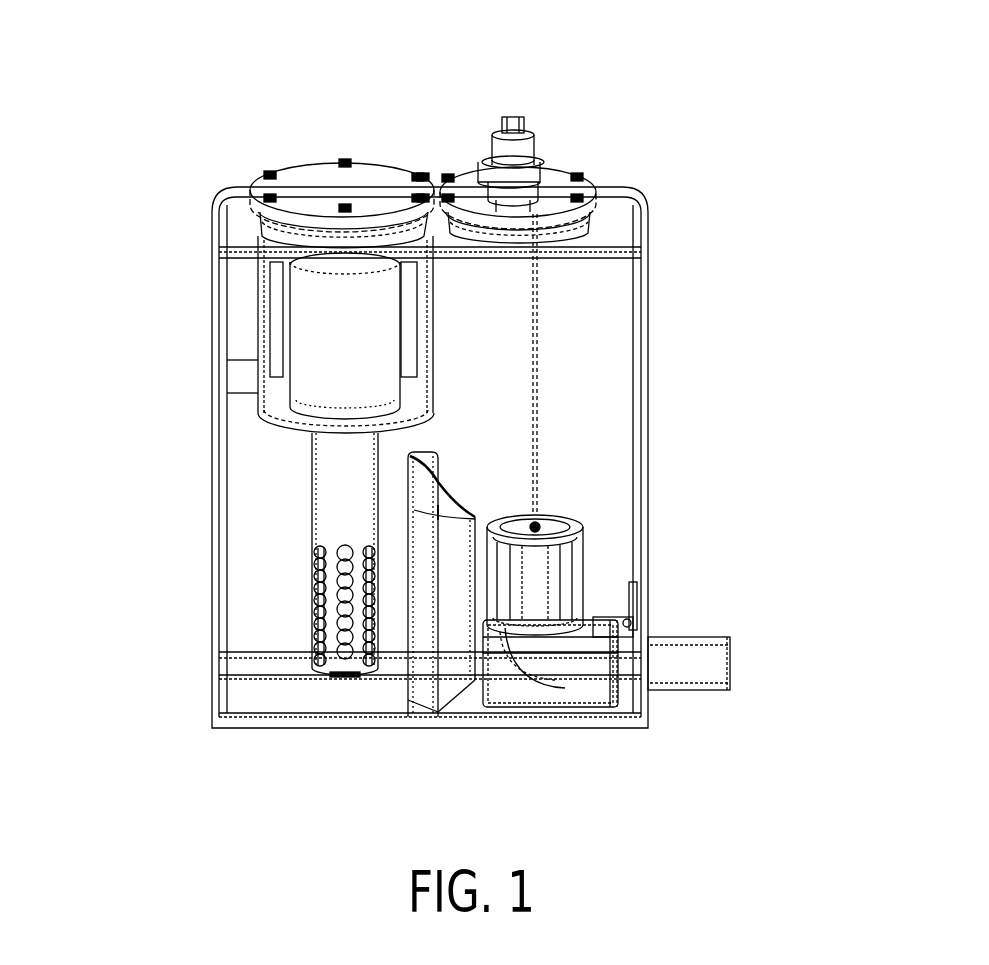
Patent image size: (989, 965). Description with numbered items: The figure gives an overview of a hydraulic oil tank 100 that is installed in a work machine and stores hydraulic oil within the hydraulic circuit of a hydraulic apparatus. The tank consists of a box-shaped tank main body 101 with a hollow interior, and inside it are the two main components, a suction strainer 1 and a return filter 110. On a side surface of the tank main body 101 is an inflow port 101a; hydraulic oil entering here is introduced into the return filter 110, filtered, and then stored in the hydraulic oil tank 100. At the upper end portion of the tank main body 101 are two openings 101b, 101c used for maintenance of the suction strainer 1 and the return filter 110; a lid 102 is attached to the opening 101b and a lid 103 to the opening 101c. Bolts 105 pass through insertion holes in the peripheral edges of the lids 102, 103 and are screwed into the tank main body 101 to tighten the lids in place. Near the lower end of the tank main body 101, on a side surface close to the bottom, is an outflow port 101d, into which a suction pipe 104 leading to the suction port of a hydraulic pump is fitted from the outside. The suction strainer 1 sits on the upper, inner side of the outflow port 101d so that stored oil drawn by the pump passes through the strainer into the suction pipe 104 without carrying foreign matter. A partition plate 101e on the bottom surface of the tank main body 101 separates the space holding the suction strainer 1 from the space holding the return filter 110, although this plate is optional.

The hydraulic oil tank 100 is at (762, 36).
The tank main body 101 is at (650, 300).
The inflow port 101a is at (238, 380).
The opening 101b is at (258, 219).
The opening 101c is at (600, 215).
The outflow port 101d is at (568, 670).
The partition plate 101e is at (445, 628).
The lid 102 is at (312, 195).
The lid 103 is at (550, 182).
The suction pipe 104 is at (698, 637).
The bolts 105 is at (448, 176).
The return filter 110 is at (312, 348).
The suction strainer 1 is at (585, 561).